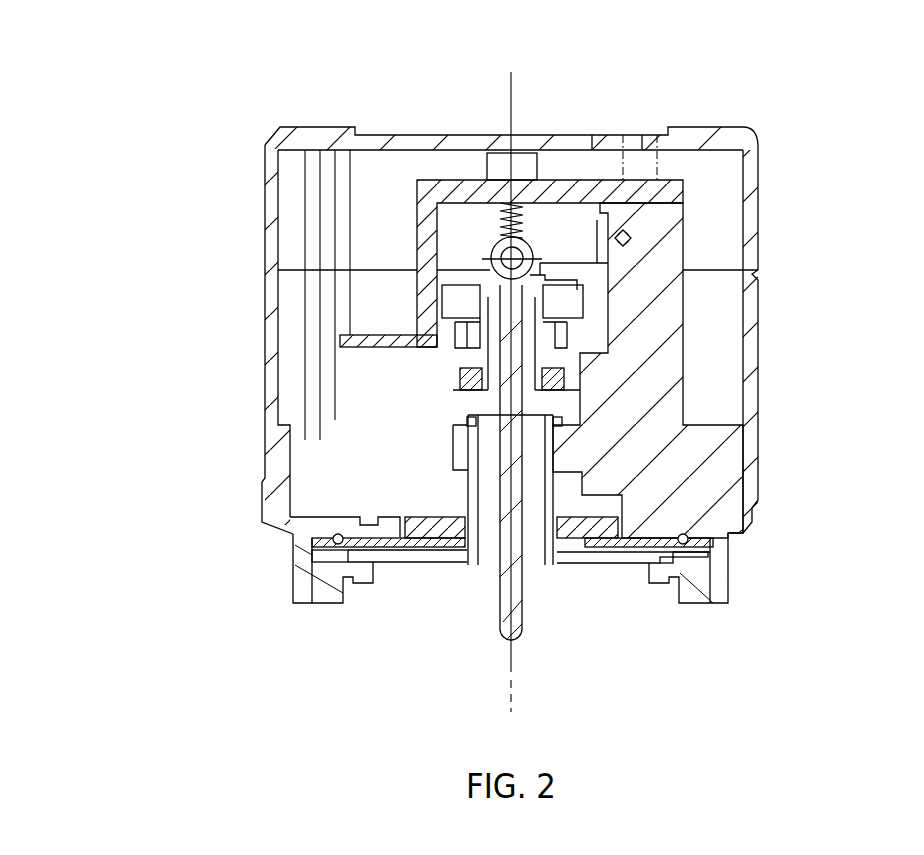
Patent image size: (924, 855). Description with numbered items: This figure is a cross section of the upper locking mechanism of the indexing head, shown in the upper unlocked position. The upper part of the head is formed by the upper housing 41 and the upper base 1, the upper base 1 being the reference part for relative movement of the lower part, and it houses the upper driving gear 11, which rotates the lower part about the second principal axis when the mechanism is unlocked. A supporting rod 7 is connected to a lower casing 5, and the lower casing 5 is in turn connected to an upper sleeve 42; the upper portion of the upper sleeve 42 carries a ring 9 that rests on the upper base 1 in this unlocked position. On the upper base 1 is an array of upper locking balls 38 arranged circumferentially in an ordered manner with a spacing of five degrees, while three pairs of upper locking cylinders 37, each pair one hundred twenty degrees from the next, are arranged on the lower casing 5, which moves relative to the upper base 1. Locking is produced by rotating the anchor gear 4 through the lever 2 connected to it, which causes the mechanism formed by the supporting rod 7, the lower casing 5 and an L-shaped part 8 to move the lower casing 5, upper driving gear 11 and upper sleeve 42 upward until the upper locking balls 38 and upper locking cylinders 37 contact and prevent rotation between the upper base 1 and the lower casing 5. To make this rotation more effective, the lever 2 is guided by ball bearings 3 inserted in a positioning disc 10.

The upper base 1 is at (650, 334).
The lever 2 is at (437, 262).
The ball bearings 3 is at (462, 353).
The anchor gear 4 is at (555, 378).
The lower casing 5 is at (688, 582).
The supporting rod 7 is at (506, 238).
The L-shaped part 8 is at (568, 243).
The ring 9 is at (553, 441).
The positioning disc 10 is at (460, 332).
The upper driving gear 11 is at (435, 540).
The upper locking cylinders 37 is at (330, 553).
The upper locking balls 38 is at (405, 543).
The upper housing 41 is at (680, 138).
The upper sleeve 42 is at (550, 553).